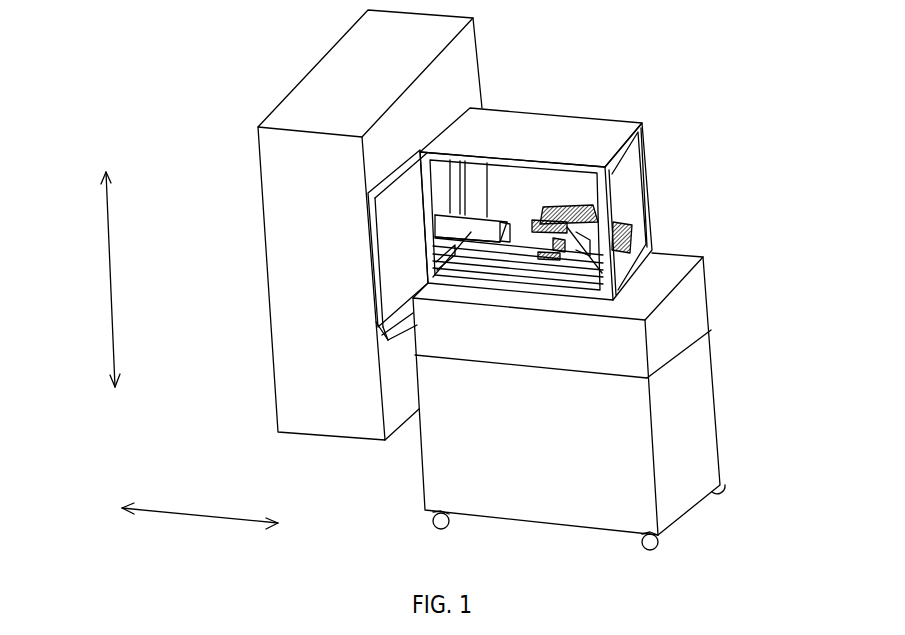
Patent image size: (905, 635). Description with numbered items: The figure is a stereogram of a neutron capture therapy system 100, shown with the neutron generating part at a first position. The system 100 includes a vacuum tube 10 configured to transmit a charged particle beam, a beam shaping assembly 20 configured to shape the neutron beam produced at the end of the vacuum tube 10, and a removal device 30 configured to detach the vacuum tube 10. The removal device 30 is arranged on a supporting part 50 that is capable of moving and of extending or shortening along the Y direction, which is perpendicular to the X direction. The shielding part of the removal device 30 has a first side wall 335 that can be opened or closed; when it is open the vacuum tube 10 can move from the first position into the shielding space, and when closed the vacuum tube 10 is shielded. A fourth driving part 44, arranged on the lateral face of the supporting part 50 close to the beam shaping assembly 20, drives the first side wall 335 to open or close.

The neutron capture therapy system 100 is at (287, 88).
The beam shaping assembly 20 is at (287, 225).
The removal device 30 is at (565, 138).
The vacuum tube 10 is at (473, 230).
The first side wall 335 is at (395, 268).
The fourth driving part 44 is at (382, 343).
The supporting part 50 is at (688, 385).